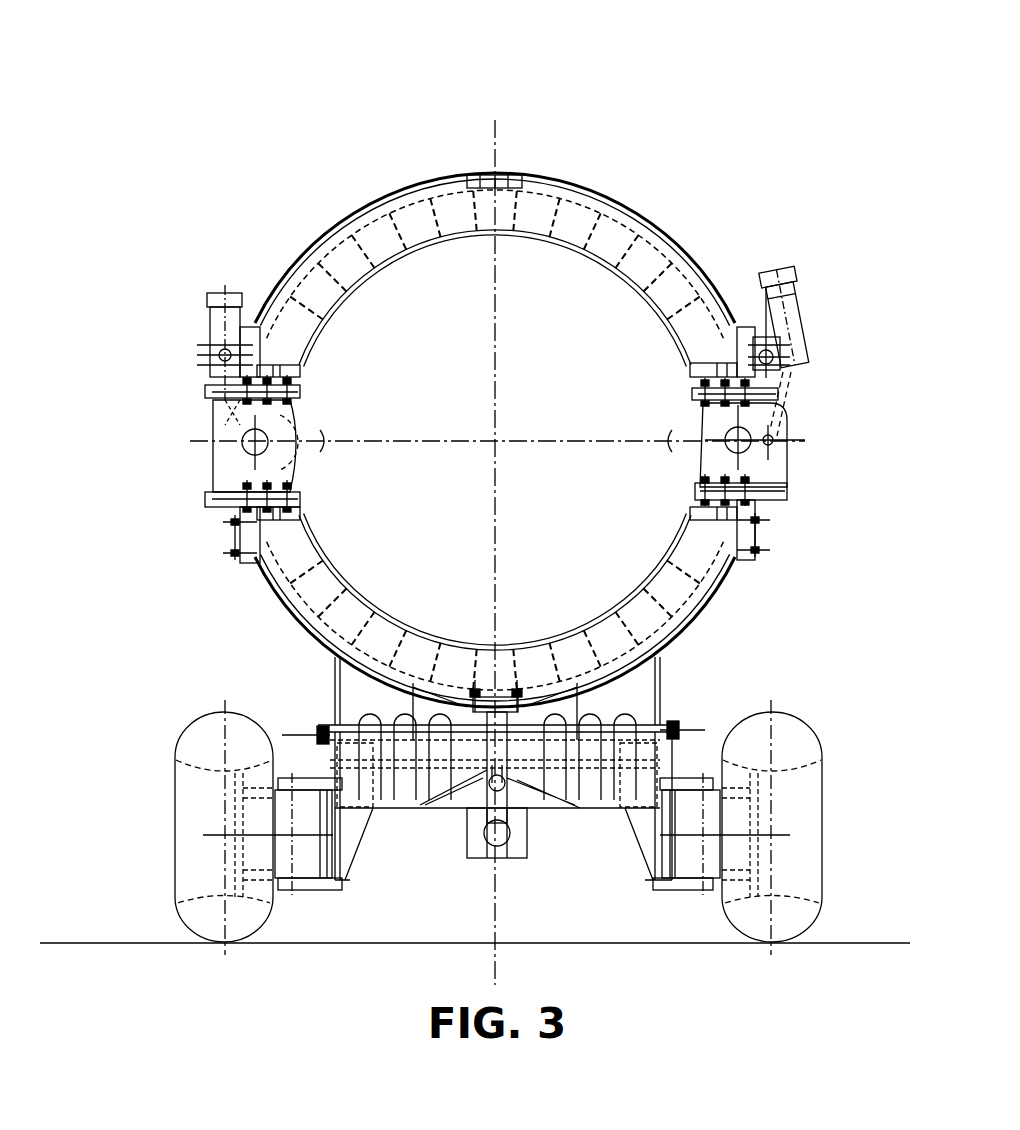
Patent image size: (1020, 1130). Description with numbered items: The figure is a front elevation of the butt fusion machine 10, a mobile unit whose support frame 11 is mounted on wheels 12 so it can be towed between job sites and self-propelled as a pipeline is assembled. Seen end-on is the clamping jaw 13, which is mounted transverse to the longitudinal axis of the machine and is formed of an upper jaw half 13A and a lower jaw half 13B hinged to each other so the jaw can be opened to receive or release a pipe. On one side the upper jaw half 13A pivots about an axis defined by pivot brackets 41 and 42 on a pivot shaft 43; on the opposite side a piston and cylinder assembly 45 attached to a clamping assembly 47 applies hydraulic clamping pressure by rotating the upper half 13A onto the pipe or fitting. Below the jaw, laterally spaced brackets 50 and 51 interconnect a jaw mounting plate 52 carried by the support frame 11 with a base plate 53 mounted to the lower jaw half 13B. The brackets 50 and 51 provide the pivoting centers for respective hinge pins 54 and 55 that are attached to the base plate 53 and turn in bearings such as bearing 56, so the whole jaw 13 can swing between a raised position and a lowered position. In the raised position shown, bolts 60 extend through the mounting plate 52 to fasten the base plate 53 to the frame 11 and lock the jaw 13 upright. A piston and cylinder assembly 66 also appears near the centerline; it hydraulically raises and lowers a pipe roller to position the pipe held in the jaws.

The butt fusion machine 10 is at (232, 118).
The support frame 11 is at (620, 810).
The wheels 12 is at (800, 910).
The jaw 13 is at (285, 272).
The upper jaw half 13A is at (387, 232).
The lower jaw half 13B is at (287, 575).
The pivot bracket 41 is at (235, 407).
The pivot bracket 42 is at (235, 480).
The pivot shaft 43 is at (240, 440).
The piston and cylinder assembly 45 is at (822, 322).
The clamping assembly 47 is at (780, 462).
The bracket 50 is at (320, 720).
The bracket 51 is at (670, 730).
The jaw mounting plate 52 is at (480, 855).
The base plate 53 is at (660, 677).
The hinge pin 54 is at (318, 733).
The hinge pin 55 is at (683, 737).
The bearing 56 is at (330, 700).
The bolts 60 is at (592, 780).
The piston and cylinder assembly 66 is at (515, 855).